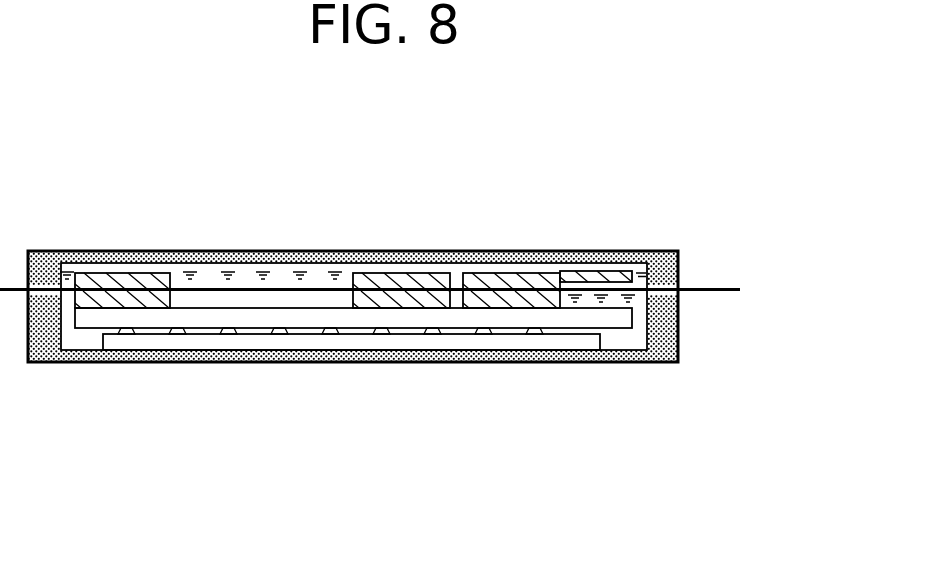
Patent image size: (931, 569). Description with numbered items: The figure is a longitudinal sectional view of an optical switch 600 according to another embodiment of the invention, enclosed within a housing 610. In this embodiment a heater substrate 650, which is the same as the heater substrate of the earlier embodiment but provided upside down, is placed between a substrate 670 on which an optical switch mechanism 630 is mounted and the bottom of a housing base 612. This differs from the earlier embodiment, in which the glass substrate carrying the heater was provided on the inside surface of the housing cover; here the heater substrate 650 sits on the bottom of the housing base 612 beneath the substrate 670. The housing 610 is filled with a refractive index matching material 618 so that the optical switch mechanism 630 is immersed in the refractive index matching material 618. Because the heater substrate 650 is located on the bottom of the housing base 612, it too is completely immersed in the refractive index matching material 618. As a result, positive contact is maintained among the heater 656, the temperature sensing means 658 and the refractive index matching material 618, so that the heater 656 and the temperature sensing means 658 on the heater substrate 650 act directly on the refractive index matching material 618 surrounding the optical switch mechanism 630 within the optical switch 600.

The optical switch 600 is at (573, 512).
The housing 610 is at (678, 262).
The housing base 612 is at (663, 338).
The refractive index matching material 618 is at (213, 280).
The optical switch mechanism 630 is at (460, 303).
The heater substrate 650 is at (312, 342).
The heater 656 is at (222, 335).
The temperature sensing means 658 is at (545, 337).
The substrate 670 is at (93, 318).